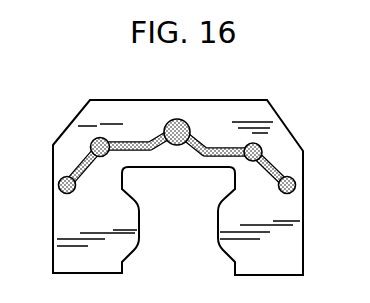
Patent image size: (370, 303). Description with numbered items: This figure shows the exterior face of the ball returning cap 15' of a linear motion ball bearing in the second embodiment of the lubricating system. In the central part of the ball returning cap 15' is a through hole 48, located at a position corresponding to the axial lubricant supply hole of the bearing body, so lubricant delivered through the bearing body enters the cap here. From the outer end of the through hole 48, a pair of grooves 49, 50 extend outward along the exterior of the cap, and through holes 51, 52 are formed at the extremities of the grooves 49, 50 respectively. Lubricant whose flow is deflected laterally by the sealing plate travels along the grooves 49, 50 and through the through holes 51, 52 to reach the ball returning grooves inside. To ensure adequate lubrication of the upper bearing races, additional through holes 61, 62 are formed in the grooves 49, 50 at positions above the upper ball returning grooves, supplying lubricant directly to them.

The ball returning cap 15' is at (187, 178).
The through hole 48 is at (177, 119).
The groove 49 is at (127, 142).
The groove 50 is at (226, 148).
The through hole 51 is at (60, 186).
The through hole 52 is at (296, 189).
The through hole 61 is at (92, 144).
The through hole 62 is at (258, 150).